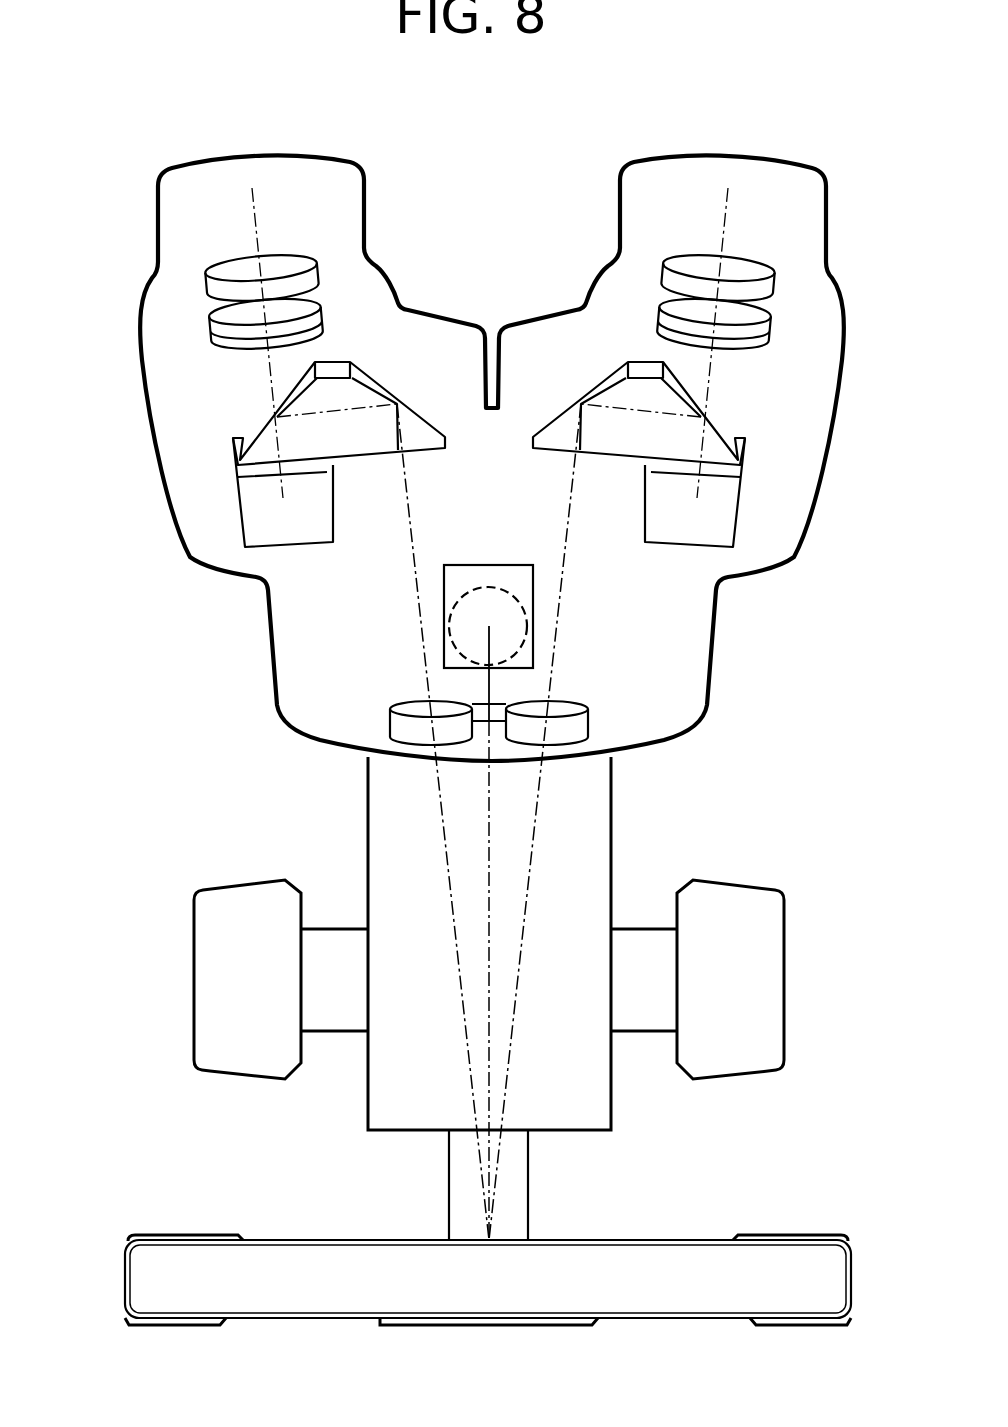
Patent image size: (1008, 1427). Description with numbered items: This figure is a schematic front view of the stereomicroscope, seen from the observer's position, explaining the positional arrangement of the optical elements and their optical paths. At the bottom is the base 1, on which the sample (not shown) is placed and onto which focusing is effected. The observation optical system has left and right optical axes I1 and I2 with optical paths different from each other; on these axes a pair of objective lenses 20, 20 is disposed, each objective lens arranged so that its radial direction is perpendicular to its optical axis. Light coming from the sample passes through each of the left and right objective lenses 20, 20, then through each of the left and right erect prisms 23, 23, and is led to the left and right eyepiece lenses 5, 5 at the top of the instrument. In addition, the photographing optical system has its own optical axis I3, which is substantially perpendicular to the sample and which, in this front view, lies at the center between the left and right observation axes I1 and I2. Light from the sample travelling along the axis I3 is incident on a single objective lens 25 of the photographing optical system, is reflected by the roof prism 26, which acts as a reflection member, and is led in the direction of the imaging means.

The base 1 is at (673, 1250).
The eyepiece lens 5 is at (207, 291).
The objective lens of the observation optical system 20 is at (405, 707).
The erect prism 23 is at (257, 417).
The objective lens of the photographing optical system 25 is at (495, 703).
The roof prism 26 is at (489, 565).
The left optical axis of the observation optical system I1 is at (443, 860).
The right optical axis of the observation optical system I2 is at (533, 858).
The optical axis of the photographing optical system I3 is at (490, 783).